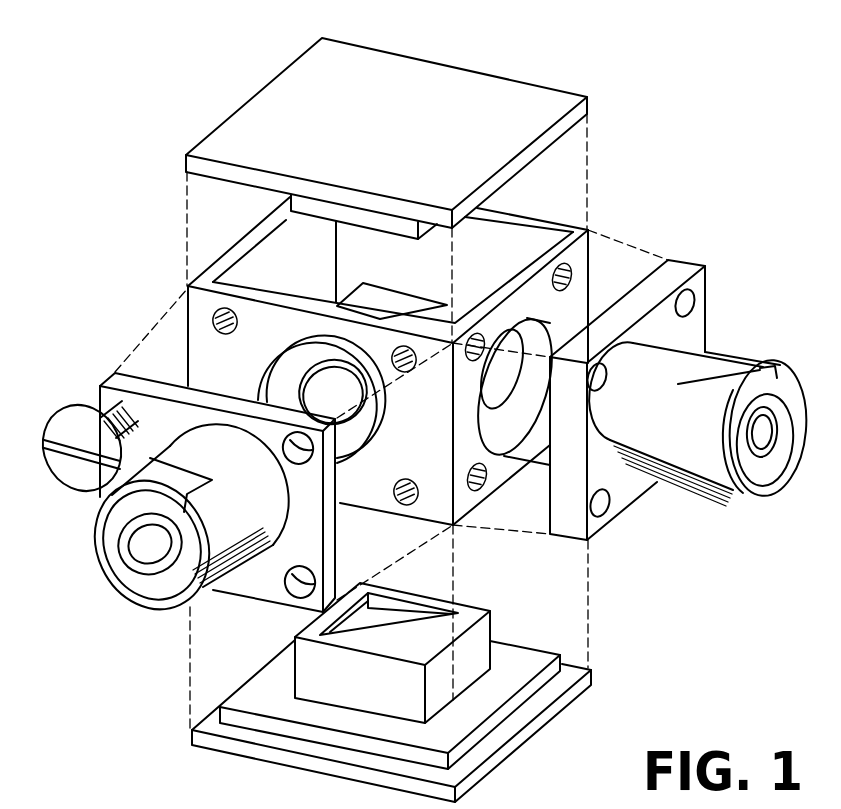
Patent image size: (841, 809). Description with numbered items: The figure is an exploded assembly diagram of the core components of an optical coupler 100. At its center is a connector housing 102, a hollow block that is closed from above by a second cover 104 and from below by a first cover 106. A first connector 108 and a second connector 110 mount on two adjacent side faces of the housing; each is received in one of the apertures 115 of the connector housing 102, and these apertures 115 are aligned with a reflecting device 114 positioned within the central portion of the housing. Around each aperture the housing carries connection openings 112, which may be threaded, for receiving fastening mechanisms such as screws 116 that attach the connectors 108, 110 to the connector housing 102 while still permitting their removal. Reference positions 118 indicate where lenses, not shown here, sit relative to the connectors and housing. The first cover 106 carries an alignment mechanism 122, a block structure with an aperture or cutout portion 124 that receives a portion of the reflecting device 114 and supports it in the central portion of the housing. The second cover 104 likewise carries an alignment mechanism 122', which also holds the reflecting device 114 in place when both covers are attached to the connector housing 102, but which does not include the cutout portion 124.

The optical coupler 100 is at (121, 77).
The connector housing 102 is at (570, 230).
The second cover 104 is at (472, 64).
The first cover 106 is at (490, 771).
The first connector 108 is at (794, 472).
The second connector 110 is at (147, 603).
The connection openings 112 is at (220, 318).
The reflecting device 114 is at (370, 300).
The apertures 115 is at (262, 392).
The screws 116 is at (52, 432).
The lens positions 118 is at (313, 386).
The alignment mechanism 122 is at (389, 691).
The alignment mechanism 122' is at (354, 185).
The aperture or cutout portion 124 is at (375, 617).